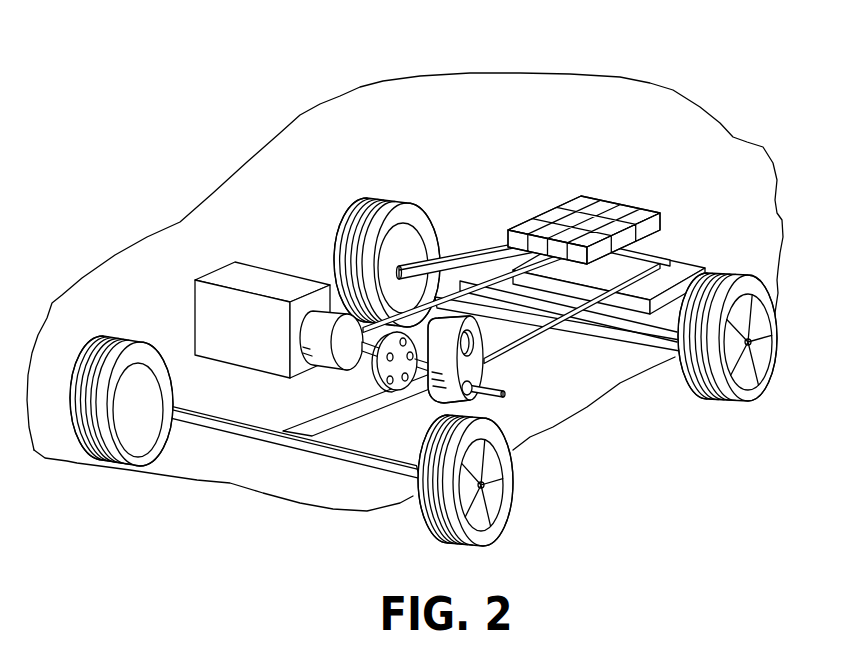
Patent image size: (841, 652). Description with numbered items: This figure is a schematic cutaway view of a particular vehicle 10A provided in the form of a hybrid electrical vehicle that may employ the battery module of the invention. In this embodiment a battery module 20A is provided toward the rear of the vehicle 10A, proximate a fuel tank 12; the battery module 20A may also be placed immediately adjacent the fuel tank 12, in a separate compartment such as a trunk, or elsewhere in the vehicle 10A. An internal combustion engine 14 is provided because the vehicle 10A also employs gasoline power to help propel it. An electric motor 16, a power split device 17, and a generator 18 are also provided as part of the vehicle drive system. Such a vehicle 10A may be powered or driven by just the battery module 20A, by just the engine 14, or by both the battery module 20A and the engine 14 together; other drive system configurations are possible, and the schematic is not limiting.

The vehicle 10A is at (716, 98).
The fuel tank 12 is at (682, 270).
The internal combustion engine 14 is at (223, 278).
The electric motor 16 is at (325, 318).
The power split device 17 is at (375, 372).
The generator 18 is at (488, 381).
The battery module 20A is at (573, 193).